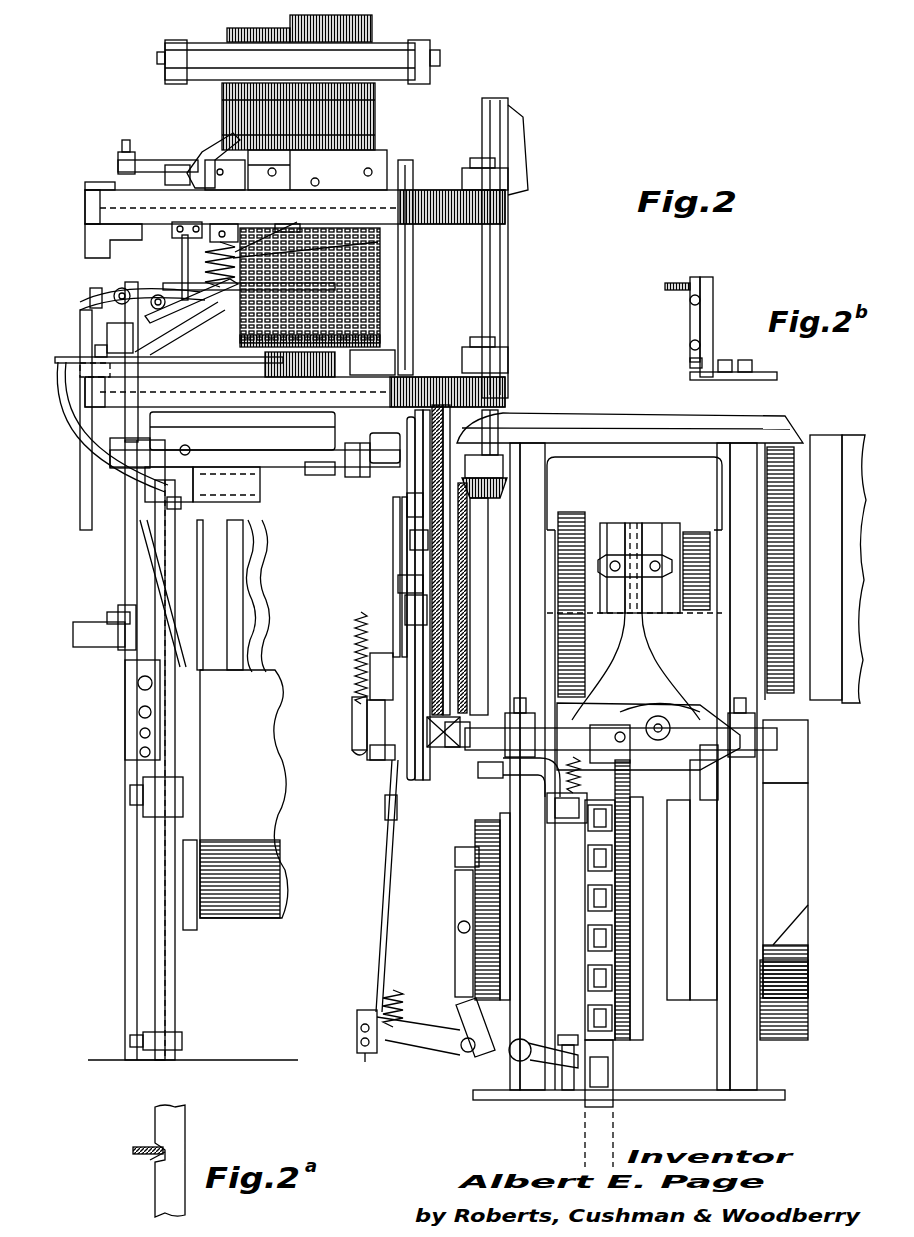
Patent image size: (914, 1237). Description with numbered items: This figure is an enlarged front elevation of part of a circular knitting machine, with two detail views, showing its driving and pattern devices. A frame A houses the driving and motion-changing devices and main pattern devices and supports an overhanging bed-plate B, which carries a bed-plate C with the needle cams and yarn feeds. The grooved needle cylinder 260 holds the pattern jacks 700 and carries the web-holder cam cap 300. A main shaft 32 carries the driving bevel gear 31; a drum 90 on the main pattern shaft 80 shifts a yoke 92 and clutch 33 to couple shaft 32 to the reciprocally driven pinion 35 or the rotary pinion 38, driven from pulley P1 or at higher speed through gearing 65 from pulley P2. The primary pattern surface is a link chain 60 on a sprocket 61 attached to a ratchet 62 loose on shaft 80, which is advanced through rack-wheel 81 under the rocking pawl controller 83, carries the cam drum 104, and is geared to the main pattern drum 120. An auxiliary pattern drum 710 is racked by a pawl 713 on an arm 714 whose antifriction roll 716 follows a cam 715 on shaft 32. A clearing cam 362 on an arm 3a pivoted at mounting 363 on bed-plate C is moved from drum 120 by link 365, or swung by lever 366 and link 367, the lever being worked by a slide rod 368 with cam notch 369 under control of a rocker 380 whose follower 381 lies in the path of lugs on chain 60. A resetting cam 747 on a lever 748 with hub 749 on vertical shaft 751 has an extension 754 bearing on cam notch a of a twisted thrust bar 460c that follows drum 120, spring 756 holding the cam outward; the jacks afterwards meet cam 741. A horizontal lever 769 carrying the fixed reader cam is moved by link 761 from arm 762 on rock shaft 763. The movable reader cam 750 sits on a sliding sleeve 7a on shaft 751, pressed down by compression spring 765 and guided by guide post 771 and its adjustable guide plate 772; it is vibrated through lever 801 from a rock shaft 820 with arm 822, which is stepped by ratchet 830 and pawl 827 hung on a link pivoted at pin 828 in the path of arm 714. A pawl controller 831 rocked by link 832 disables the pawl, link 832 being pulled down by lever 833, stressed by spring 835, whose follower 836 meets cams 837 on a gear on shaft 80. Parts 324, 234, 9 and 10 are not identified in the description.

In FIG. 2, the web-holder cam cap 300 is at (403, 62).
In FIG. 2, the needle cylinder 260 is at (373, 115).
In FIG. 2, the clearing cam 362 is at (230, 140).
In FIG. 2, the cam mounting pivot 363 is at (205, 163).
In FIG. 2, the arm 3a is at (176, 165).
In FIG. 2, the link 365 is at (118, 165).
In FIG. 2, the link 367 is at (88, 186).
In FIG. 2, the lever 366 is at (95, 232).
In FIG. 2, the extension 754 is at (172, 233).
In FIG. 2A, the extension 754 is at (133, 1150).
In FIG. 2, the hub 749 is at (213, 227).
In FIG. 2, the lever 748 is at (250, 205).
In FIG. 2, the resetting cam 747 is at (292, 213).
In FIG. 2, the compression spring 765 is at (297, 222).
In FIG. 2, the spring 756 is at (185, 266).
In FIG. 2, the reader cam 750 is at (92, 295).
In FIG. 2B, the reader cam 750 is at (690, 293).
In FIG. 2, the lever 801 is at (107, 328).
In FIG. 2, the sliding sleeve 7a is at (180, 328).
In FIG. 2, the link 761 is at (78, 362).
In FIG. 2, the pattern jacks 700 is at (250, 278).
In FIG. 2, the cam notch 369 is at (378, 242).
In FIG. 2, the vertical shaft 751 is at (248, 300).
In FIG. 2, the cam 741 is at (367, 357).
In FIG. 2, the slide rod 368 is at (420, 322).
In FIG. 2, the bed-plate C is at (510, 208).
In FIG. 2, the bed-plate B is at (508, 392).
In FIG. 2B, the bed-plate B is at (770, 378).
In FIG. 2, the horizontal lever 769 is at (263, 358).
In FIG. 2, the arm 762 is at (70, 398).
In FIG. 2, the rock shaft 820 is at (290, 480).
In FIG. 2, the arm 822 is at (362, 477).
In FIG. 2, the pawl 713 is at (407, 517).
In FIG. 2, the antifriction roll 716 is at (410, 545).
In FIG. 2, the cam 715 is at (420, 582).
In FIG. 2, the arm 714 is at (420, 598).
In FIG. 2, the twisted thrust bar 460c is at (256, 553).
In FIG. 2A, the twisted thrust bar 460c is at (173, 1122).
In FIG. 2, the main pattern drum 120 is at (258, 920).
In FIG. 2, the auxiliary pattern drum 710 is at (182, 552).
In FIG. 2, the vertical rock shaft 763 is at (155, 990).
In FIG. 2, the pin 828 is at (357, 650).
In FIG. 2, the pawl 827 is at (388, 667).
In FIG. 2, the ratchet 830 is at (378, 778).
In FIG. 2, the plate 324 is at (378, 767).
In FIG. 2, the pawl controller 831 is at (390, 820).
In FIG. 2, the link 832 is at (372, 945).
In FIG. 2, the spring 835 is at (393, 990).
In FIG. 2, the follower 836 is at (472, 1002).
In FIG. 2, the lever 833 is at (430, 1037).
In FIG. 2, the pivot screw 234 is at (505, 1047).
In FIG. 2, the frame A is at (673, 455).
In FIG. 2, the driving bevel gear 31 is at (448, 462).
In FIG. 2, the reciprocally driven pinion 35 is at (567, 512).
In FIG. 2, the main shaft 32 is at (608, 523).
In FIG. 2, the clutch 33 is at (655, 530).
In FIG. 2, the rotary pinion 38 is at (700, 608).
In FIG. 2, the yoke 92 is at (637, 680).
In FIG. 2, the rocking pawl controller 83 is at (605, 760).
In FIG. 2, the post 9 is at (510, 697).
In FIG. 2, the gearing 65 is at (778, 700).
In FIG. 2, the pulley P2 is at (825, 700).
In FIG. 2, the pulley P1 is at (848, 703).
In FIG. 2, the cams 837 is at (475, 835).
In FIG. 2, the rocker 380 is at (590, 830).
In FIG. 2, the follower 381 is at (585, 823).
In FIG. 2, the ratchet 62 is at (600, 945).
In FIG. 2, the sprocket 61 is at (598, 988).
In FIG. 2, the drum 90 is at (640, 1045).
In FIG. 2, the rack-wheel 81 is at (700, 940).
In FIG. 2, the main pattern shaft 80 is at (809, 910).
In FIG. 2, the frame plate 10 is at (680, 827).
In FIG. 2, the cam drum 104 is at (773, 1040).
In FIG. 2, the link chain 60 is at (613, 1108).
In FIG. 2B, the guide post 771 is at (713, 293).
In FIG. 2B, the guide plate 772 is at (697, 277).
In FIG. 2A, the cam notch a is at (150, 1160).